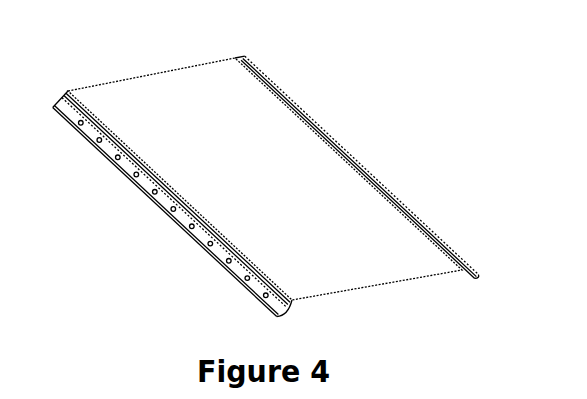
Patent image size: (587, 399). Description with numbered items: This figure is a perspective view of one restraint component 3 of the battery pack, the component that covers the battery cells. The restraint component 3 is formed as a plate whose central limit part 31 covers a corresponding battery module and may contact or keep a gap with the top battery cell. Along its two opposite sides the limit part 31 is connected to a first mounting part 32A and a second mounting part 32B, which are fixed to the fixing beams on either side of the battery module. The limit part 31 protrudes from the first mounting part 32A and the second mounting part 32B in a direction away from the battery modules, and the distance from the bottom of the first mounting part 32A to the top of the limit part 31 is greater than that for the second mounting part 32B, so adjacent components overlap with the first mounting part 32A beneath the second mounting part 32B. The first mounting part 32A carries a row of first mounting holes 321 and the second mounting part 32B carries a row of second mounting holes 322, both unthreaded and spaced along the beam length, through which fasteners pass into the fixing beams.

The restraint component 3 is at (263, 158).
The limit part 31 is at (213, 82).
The first mounting part 32A is at (357, 167).
The first mounting holes 321 is at (360, 165).
The second mounting part 32B is at (169, 204).
The second mounting holes 322 is at (172, 208).